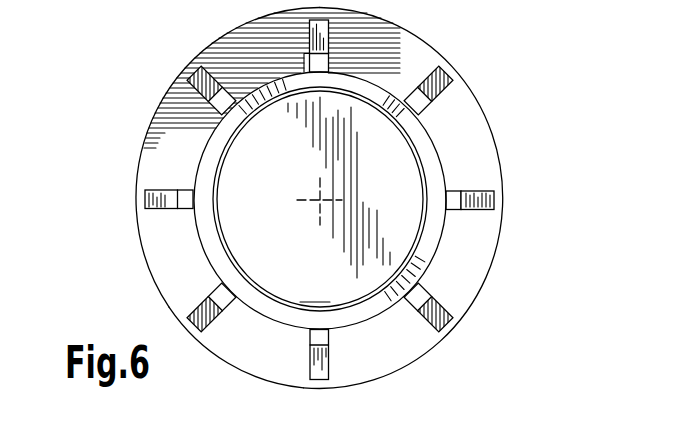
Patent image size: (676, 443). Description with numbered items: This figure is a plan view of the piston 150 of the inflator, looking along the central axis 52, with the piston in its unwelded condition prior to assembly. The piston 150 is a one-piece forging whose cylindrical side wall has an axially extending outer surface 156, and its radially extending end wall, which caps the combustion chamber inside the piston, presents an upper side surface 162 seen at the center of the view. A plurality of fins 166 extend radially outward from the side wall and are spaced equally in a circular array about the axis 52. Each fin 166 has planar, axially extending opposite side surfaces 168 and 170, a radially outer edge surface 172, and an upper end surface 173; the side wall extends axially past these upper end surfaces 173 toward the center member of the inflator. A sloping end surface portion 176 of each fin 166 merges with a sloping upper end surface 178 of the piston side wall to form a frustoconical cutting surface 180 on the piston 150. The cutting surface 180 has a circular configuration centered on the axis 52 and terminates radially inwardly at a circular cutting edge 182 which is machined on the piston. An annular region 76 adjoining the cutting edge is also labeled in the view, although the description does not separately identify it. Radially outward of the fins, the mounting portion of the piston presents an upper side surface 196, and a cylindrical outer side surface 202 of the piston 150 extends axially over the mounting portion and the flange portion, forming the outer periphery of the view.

The axis 52 is at (320, 200).
The bore 76 is at (194, 200).
The piston 150 is at (104, 258).
The outer surface 156 is at (203, 147).
The upper side surface 162 is at (303, 277).
The fins 166 is at (494, 175).
The side surface 168 is at (482, 190).
The side surface 170 is at (497, 243).
The radially outer edge surface 172 is at (495, 199).
The upper end surface 173 is at (145, 193).
The sloping end surface portion 176 is at (413, 95).
The sloping upper end surface 178 is at (302, 82).
The frustoconical cutting surface 180 is at (185, 156).
The circular cutting edge 182 is at (232, 270).
The upper side surface 196 is at (185, 277).
The cylindrical outer side surface 202 is at (212, 352).